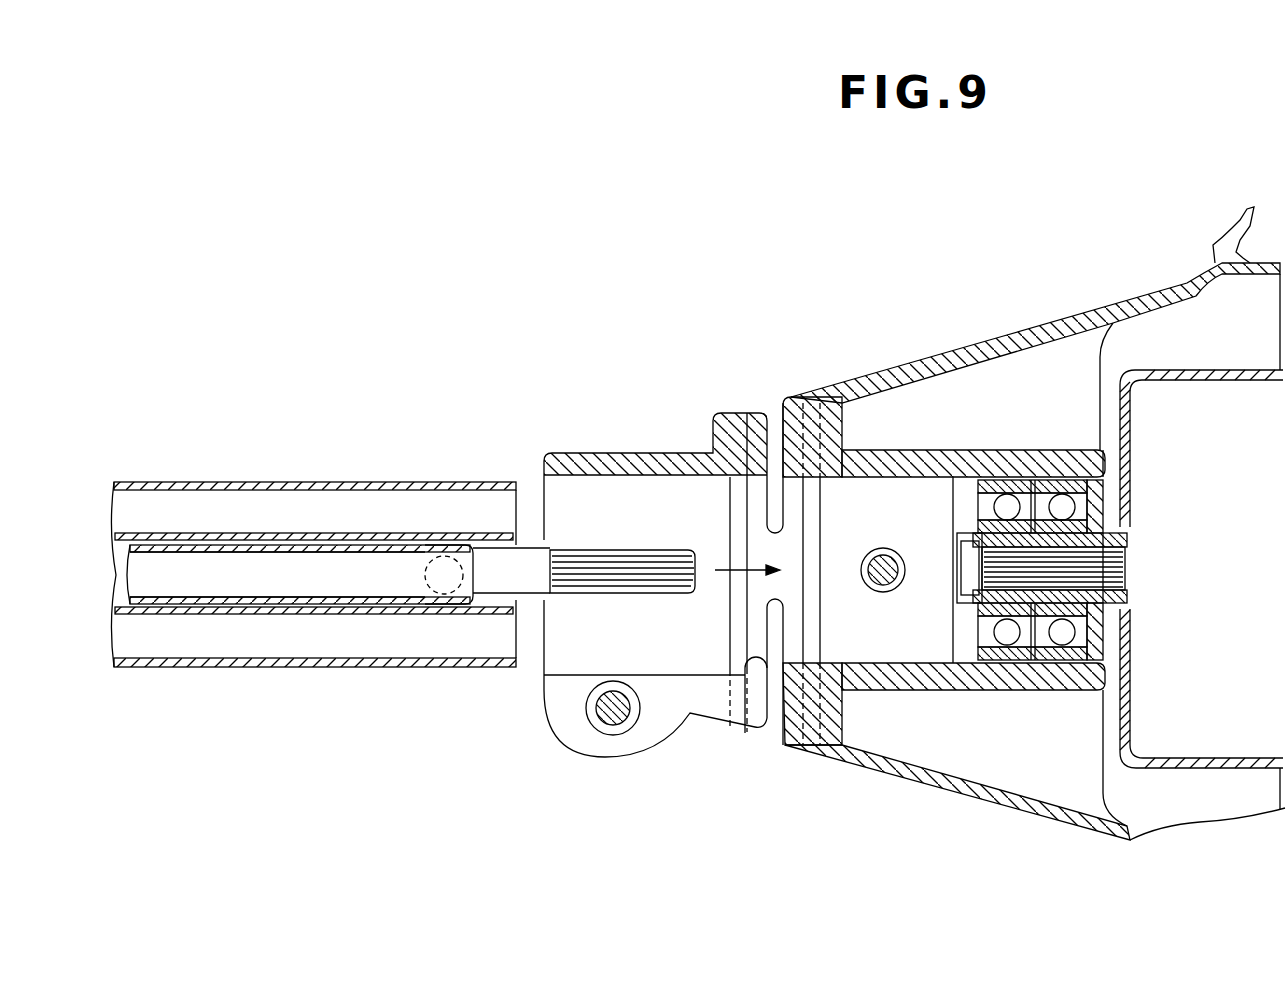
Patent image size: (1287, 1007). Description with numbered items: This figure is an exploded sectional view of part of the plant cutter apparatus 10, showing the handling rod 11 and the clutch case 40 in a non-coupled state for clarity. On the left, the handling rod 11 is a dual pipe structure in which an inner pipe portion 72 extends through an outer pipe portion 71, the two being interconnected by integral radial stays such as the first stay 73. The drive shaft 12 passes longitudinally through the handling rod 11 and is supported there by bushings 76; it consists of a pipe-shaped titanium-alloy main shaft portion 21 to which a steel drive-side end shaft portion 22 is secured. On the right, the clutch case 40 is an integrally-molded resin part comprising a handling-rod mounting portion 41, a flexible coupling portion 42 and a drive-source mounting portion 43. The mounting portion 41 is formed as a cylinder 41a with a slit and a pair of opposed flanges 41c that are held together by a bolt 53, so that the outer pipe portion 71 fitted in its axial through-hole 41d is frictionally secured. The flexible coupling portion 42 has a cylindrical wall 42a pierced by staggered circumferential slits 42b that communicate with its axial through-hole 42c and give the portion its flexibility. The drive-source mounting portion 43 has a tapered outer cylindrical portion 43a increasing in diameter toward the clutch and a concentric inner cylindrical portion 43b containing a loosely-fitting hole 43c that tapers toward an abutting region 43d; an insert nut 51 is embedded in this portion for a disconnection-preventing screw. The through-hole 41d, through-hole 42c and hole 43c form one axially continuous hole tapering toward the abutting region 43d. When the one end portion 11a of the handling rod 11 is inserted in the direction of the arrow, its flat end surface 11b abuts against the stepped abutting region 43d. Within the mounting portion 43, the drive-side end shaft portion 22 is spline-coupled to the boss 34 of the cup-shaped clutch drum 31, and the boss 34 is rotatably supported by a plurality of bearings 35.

The plant cutter apparatus 10 is at (177, 228).
The handling rod 11 is at (324, 465).
The one end portion of handling rod 11a is at (300, 478).
The end surface 11b is at (538, 470).
The drive shaft 12 is at (314, 552).
The main shaft portion 21 is at (305, 606).
The drive-side end shaft portion 22 is at (607, 568).
The clutch drum 31 is at (1210, 770).
The boss 34 is at (1132, 523).
The bearings 35 is at (1027, 663).
The clutch case 40 is at (561, 434).
The handling-rod mounting portion 41 is at (688, 206).
The cylindrical body 41a is at (580, 457).
The flanges 41c is at (570, 733).
The axial through-hole of mounting portion 41d is at (660, 487).
The flexible coupling portion 42 is at (835, 206).
The cylindrical wall 42a is at (800, 470).
The circumferential slits 42b is at (762, 460).
The axial through-hole of coupling portion 42c is at (735, 715).
The drive-source mounting portion 43 is at (835, 206).
The tapered outer cylindrical portion 43a is at (990, 797).
The inner cylindrical portion 43b is at (980, 690).
The loosely-fitting hole 43c is at (850, 487).
The abutting region 43d is at (928, 485).
The insert nut 51 is at (893, 592).
The bolt 53 is at (608, 736).
The outer pipe portion 71 is at (120, 538).
The inner pipe portion 72 is at (177, 535).
The first stay 73 is at (232, 515).
The bushings 76 is at (264, 614).